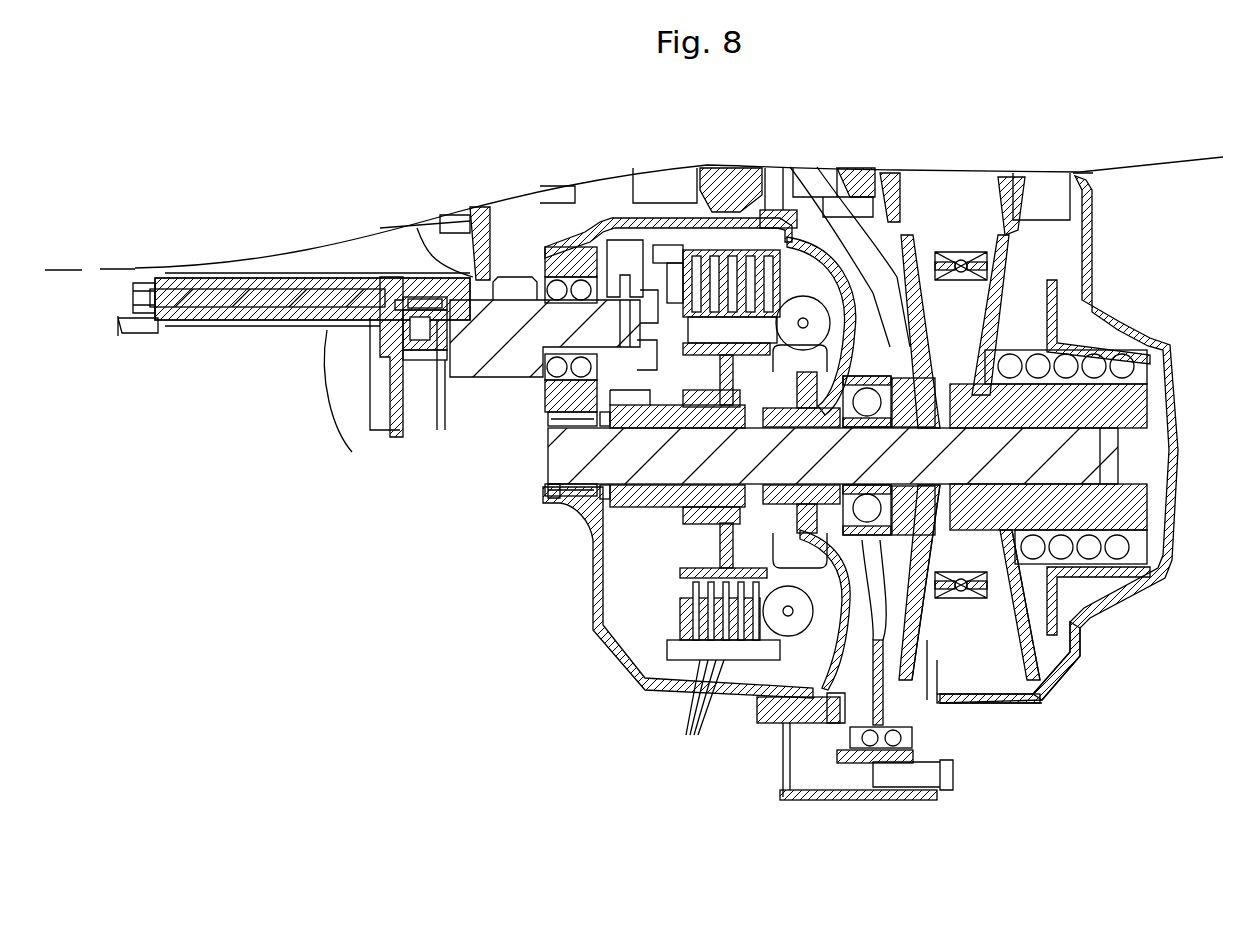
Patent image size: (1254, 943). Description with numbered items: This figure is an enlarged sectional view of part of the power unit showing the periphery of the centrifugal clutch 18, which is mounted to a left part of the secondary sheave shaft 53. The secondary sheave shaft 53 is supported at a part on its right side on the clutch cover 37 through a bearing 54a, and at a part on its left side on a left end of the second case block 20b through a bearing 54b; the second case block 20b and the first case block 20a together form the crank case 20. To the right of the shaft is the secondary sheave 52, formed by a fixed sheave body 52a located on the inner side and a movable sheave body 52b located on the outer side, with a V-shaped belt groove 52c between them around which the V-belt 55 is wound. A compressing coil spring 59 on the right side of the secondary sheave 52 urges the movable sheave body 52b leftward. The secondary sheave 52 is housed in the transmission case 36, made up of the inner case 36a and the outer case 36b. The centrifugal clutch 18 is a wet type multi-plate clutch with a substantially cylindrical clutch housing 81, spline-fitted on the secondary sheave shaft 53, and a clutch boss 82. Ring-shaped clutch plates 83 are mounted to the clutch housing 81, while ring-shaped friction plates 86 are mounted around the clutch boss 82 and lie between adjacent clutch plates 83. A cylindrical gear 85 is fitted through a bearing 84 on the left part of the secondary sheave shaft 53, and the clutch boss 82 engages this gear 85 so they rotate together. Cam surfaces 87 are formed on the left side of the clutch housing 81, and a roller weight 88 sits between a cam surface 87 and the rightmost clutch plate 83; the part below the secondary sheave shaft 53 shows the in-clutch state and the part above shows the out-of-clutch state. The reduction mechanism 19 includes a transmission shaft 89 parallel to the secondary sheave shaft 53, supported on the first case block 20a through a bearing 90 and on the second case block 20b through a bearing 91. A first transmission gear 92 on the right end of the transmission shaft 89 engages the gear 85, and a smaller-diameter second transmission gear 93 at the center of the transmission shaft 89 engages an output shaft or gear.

The centrifugal clutch 18 is at (636, 593).
The reduction mechanism 19 is at (477, 391).
The crank case 20 is at (392, 583).
The first case block 20a is at (352, 452).
The second case block 20b is at (545, 495).
The transmission case 36 is at (1092, 787).
The inner case 36a is at (945, 700).
The outer case 36b is at (1073, 677).
The clutch cover 37 is at (827, 700).
The secondary sheave 52 is at (1068, 593).
The fixed sheave body 52a is at (910, 235).
The movable sheave body 52b is at (1000, 237).
The belt groove 52c is at (952, 650).
The secondary sheave shaft 53 is at (1118, 463).
The bearing 54a is at (807, 707).
The bearing 54b is at (548, 492).
The V-belt 55 is at (947, 240).
The compressing coil spring 59 is at (1130, 352).
The clutch housing 81 is at (797, 547).
The clutch boss 82 is at (722, 528).
The clutch plates 83 is at (697, 250).
The bearing 84 is at (675, 420).
The gear 85 is at (622, 440).
The friction plates 86 is at (699, 709).
The cam surfaces 87 is at (783, 230).
The roller weight 88 is at (812, 305).
The transmission shaft 89 is at (475, 313).
The bearing 90 is at (430, 283).
The bearing 91 is at (569, 277).
The first transmission gear 92 is at (633, 247).
The second transmission gear 93 is at (518, 277).